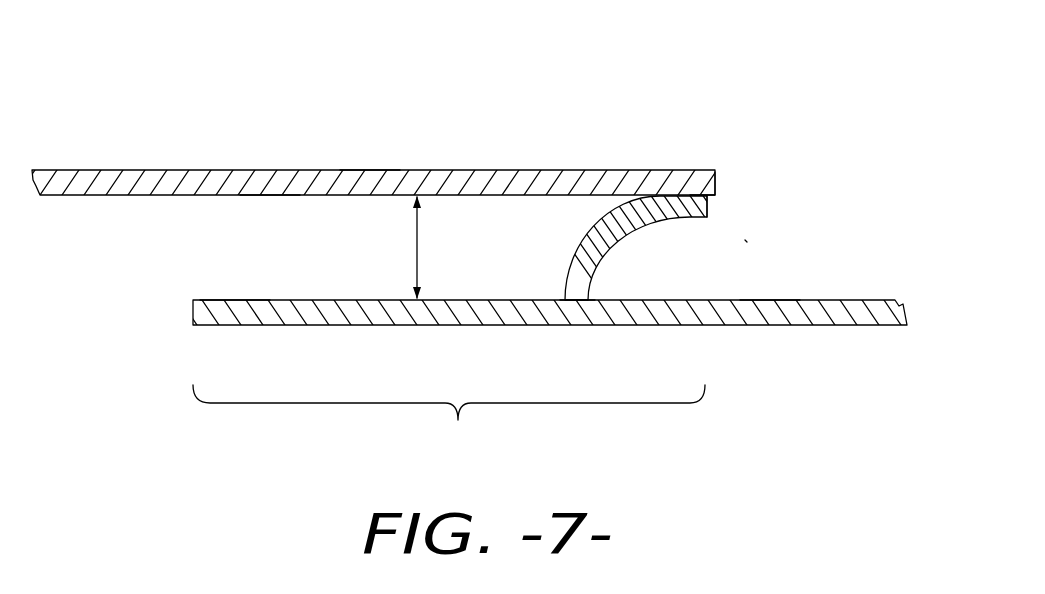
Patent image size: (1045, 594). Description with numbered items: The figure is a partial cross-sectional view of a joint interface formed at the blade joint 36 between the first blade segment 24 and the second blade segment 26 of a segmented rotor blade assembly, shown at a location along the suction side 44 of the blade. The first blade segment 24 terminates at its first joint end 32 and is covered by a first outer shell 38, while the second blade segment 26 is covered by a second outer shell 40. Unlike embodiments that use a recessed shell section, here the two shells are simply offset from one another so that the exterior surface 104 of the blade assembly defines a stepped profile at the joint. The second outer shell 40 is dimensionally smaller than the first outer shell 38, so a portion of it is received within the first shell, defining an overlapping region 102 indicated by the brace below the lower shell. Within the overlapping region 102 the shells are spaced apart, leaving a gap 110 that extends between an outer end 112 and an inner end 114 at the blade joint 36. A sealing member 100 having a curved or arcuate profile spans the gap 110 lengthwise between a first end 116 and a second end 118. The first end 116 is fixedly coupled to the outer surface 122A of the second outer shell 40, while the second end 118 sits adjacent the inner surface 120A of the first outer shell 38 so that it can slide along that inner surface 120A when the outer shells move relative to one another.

The first blade segment 24 is at (97, 137).
The second blade segment 26 is at (882, 218).
The first joint end 32 is at (715, 183).
The blade joint 36 is at (727, 108).
The first outer shell 38 is at (367, 168).
The second outer shell 40 is at (767, 300).
The suction side 44 is at (307, 168).
The exterior surface 104 is at (802, 300).
The sealing member 100 is at (618, 247).
The overlapping region 102 is at (449, 423).
The gap 110 is at (418, 252).
The outer end 112 is at (747, 238).
The inner end 114 is at (238, 247).
The first end 116 is at (707, 207).
The second end 118 is at (573, 300).
The inner surface 120A is at (265, 197).
The outer surface 122A is at (232, 300).